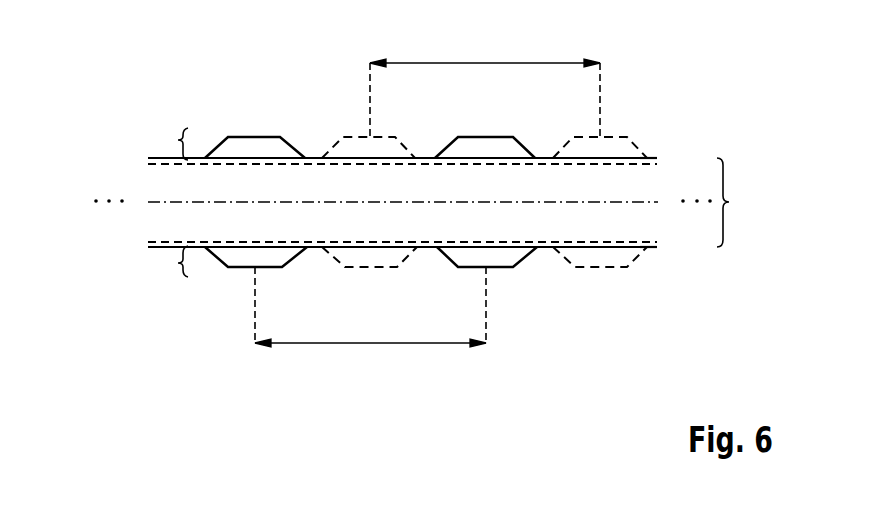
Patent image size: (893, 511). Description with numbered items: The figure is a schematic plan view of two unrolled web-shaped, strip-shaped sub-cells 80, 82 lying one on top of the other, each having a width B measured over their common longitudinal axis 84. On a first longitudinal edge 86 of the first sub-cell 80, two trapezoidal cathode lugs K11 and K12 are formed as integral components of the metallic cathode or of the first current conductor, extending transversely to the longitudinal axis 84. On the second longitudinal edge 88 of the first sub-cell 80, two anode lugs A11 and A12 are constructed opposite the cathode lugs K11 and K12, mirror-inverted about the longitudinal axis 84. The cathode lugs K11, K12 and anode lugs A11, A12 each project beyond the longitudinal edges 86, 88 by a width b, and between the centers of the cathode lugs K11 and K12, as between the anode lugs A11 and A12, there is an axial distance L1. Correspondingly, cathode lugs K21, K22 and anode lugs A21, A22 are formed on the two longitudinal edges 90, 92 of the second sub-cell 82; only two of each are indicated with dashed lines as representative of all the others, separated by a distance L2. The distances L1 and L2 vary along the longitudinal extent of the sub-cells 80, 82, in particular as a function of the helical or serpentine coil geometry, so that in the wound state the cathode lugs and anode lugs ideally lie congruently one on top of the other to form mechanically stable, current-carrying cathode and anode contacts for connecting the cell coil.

The first sub-cell 80 is at (148, 177).
The second sub-cell 82 is at (402, 202).
The common longitudinal axis 84 is at (158, 204).
The first longitudinal edge 86 is at (322, 163).
The second longitudinal edge 88 is at (552, 246).
The longitudinal edge of the second sub-cell 90 is at (655, 158).
The longitudinal edge of the second sub-cell 92 is at (655, 248).
The cathode lug K11 is at (254, 137).
The cathode lug K21 is at (360, 136).
The cathode lug K12 is at (484, 137).
The cathode lug K22 is at (611, 136).
The anode lug A11 is at (244, 267).
The anode lug A21 is at (372, 268).
The anode lug A12 is at (490, 268).
The anode lug A22 is at (608, 268).
The axial distance L1 is at (370, 346).
The distance L2 is at (484, 62).
The width b is at (178, 140).
The width B is at (731, 202).